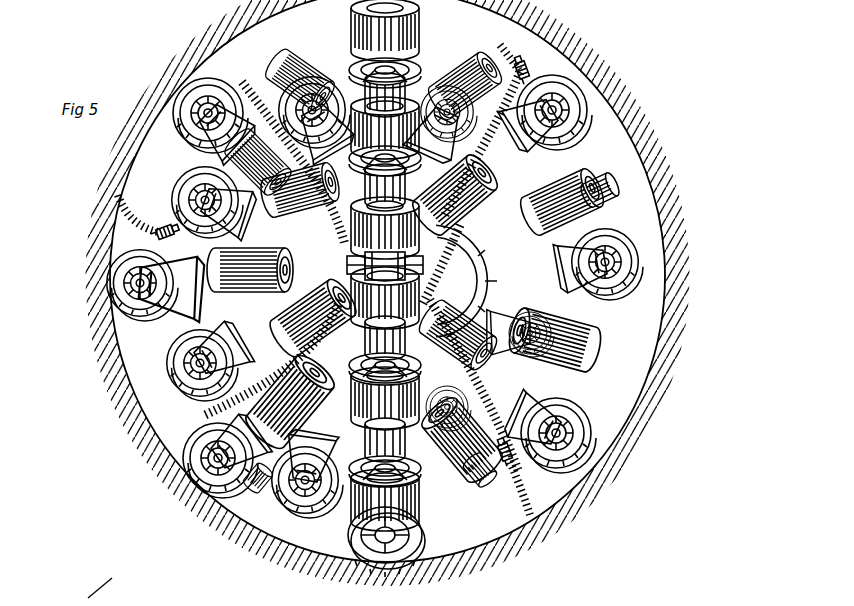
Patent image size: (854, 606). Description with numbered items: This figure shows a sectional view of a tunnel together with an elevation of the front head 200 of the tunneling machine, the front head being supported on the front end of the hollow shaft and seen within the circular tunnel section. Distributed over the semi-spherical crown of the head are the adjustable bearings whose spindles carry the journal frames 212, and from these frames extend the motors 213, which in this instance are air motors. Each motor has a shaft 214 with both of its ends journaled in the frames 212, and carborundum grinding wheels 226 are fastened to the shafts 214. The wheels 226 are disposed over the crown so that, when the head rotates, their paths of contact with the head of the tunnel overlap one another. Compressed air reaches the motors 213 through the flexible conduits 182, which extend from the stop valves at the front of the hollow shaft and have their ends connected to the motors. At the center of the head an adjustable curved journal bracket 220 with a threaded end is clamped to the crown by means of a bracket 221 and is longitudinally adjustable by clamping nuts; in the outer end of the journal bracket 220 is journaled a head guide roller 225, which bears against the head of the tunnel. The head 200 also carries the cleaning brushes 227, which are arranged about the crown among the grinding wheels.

The front head 200 is at (550, 150).
The flexible conduits 182 is at (578, 388).
The journal frames 212 is at (373, 285).
The motors 213 is at (300, 62).
The shafts 214 is at (205, 95).
The adjustable curved journal bracket 220 is at (347, 270).
The bracket 221 is at (365, 262).
The head guide roller 225 is at (461, 281).
The carborundum grinding wheels 226 is at (357, 25).
The cleaning brushes 227 is at (522, 65).